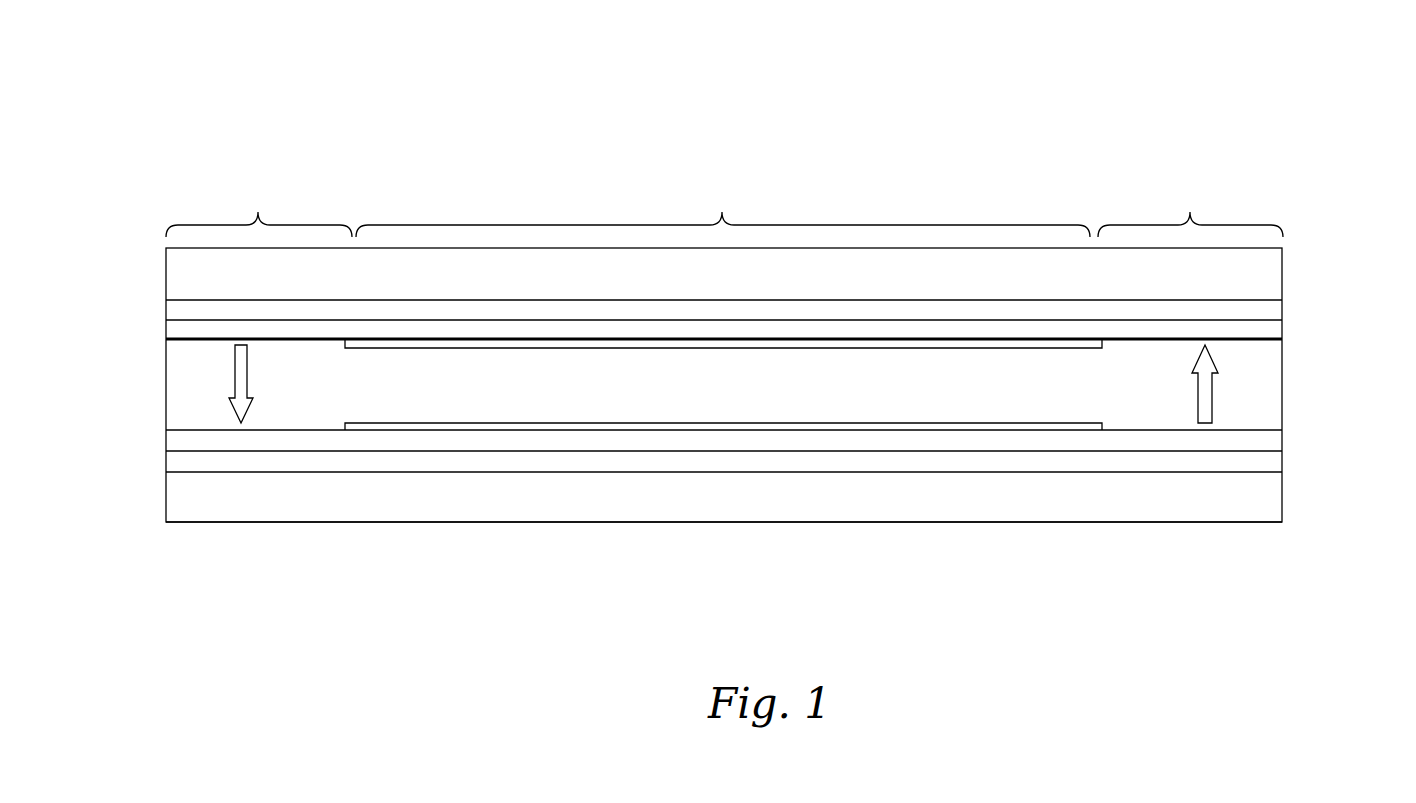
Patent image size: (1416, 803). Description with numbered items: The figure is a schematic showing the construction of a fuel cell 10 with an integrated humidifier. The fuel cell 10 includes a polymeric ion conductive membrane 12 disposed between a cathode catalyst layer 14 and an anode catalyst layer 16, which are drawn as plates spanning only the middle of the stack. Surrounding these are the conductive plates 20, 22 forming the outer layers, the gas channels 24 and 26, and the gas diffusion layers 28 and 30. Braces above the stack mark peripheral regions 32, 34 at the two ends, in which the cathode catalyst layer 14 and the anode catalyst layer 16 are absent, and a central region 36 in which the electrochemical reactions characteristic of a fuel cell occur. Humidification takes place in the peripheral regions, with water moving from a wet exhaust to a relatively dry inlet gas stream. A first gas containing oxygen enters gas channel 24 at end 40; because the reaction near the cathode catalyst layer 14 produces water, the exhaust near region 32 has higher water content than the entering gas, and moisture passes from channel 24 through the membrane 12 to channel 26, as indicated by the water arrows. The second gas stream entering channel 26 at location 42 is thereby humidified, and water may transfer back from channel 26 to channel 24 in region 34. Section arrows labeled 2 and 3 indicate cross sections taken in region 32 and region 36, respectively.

The fuel cell 10 is at (1105, 122).
The polymeric ion conductive membrane 12 is at (1253, 380).
The cathode catalyst layer 14 is at (1073, 350).
The anode catalyst layer 16 is at (1092, 422).
The conductive plate 20 is at (413, 252).
The conductive plate 22 is at (385, 515).
The gas channel 24 is at (182, 308).
The gas channel 26 is at (185, 463).
The gas diffusion layer 28 is at (172, 330).
The gas diffusion layer 30 is at (193, 433).
The peripheral region 32 is at (259, 212).
The peripheral region 34 is at (1190, 212).
The region 36 is at (723, 211).
The end 40 is at (1283, 307).
The location 42 is at (166, 461).
The cross section 2 is at (293, 247).
The cross section 3 is at (622, 248).